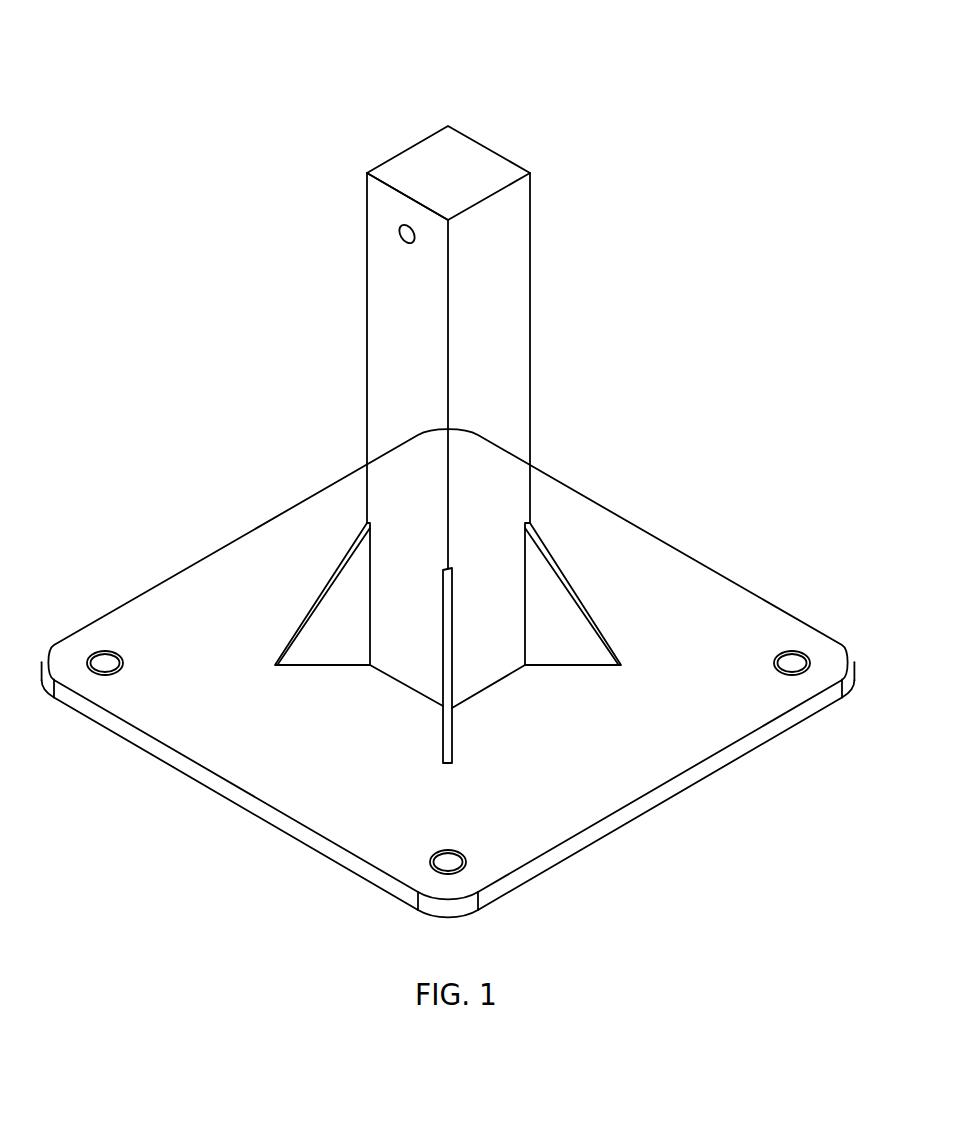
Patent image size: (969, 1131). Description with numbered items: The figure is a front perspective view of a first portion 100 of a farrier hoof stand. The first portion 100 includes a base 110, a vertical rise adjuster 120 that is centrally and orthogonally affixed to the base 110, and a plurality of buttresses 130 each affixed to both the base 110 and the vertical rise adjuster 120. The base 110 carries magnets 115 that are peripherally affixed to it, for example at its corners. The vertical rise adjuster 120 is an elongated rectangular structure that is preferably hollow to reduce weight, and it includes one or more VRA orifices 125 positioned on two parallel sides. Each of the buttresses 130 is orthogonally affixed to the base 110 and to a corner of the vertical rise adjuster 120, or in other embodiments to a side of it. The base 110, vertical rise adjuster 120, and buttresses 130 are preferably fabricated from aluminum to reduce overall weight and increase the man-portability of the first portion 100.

The first portion 100 is at (152, 148).
The base 110 is at (132, 600).
The magnets 115 is at (774, 662).
The vertical rise adjuster 120 is at (530, 352).
The VRA orifices 125 is at (410, 244).
The buttresses 130 is at (303, 665).